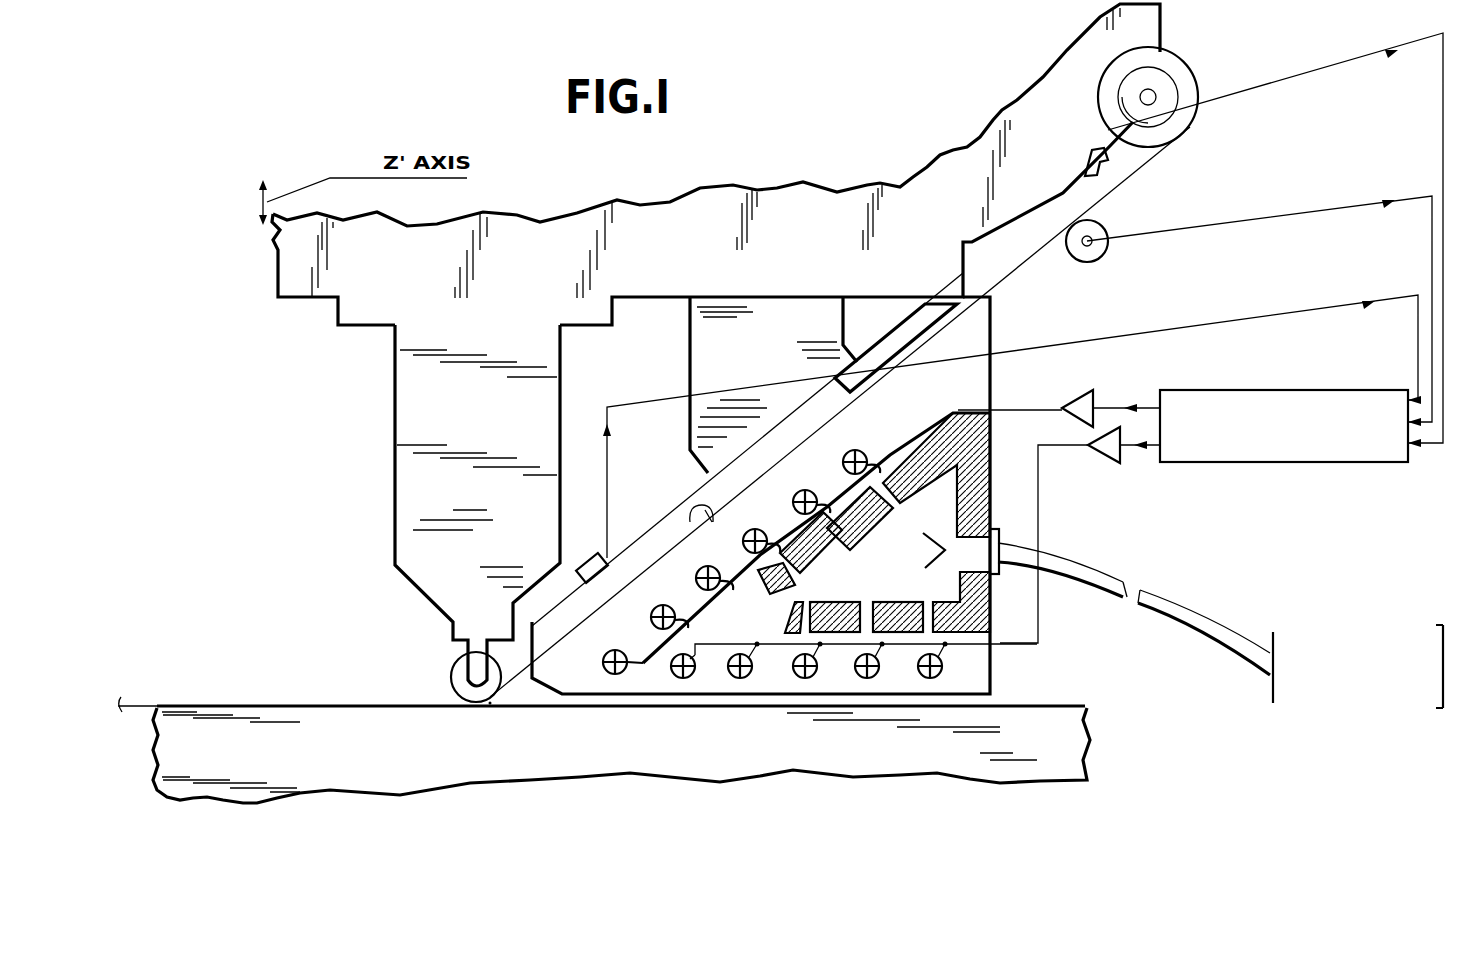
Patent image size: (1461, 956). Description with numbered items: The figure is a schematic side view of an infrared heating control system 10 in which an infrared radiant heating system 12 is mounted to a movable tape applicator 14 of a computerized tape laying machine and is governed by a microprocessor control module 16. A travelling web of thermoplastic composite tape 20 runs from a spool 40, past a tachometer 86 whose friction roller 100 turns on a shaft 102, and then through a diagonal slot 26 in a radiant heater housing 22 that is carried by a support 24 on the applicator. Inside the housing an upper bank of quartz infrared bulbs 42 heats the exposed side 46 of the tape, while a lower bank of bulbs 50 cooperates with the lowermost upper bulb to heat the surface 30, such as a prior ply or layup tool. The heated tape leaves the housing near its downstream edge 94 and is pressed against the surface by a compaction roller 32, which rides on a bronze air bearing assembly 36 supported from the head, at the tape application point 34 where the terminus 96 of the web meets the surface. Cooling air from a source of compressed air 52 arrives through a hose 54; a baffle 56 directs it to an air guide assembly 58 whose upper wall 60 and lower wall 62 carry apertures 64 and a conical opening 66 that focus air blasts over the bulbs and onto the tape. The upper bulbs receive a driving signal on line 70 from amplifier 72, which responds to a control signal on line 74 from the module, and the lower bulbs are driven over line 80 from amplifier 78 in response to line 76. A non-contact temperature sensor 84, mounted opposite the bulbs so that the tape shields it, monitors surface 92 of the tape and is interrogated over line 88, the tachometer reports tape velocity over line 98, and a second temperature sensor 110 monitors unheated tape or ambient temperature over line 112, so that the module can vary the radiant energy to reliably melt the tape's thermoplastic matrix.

The infrared heating control system 10 is at (272, 494).
The infrared radiant heating system 12 is at (1008, 378).
The tape applicator 14 is at (697, 188).
The microprocessor control module 16 is at (1358, 464).
The thermoplastic composite tape 20 is at (1140, 172).
The radiant heater housing 22 is at (1003, 322).
The support 24 is at (765, 357).
The diagonal slot 26 is at (916, 346).
The surface 30 is at (597, 707).
The compaction roller 32 is at (458, 665).
The tape application point 34 is at (486, 708).
The bronze air bearing assembly 36 is at (500, 423).
The spool 40 is at (1190, 70).
The upper bank of quartz infrared emitting bulbs 42 is at (870, 443).
The exposed side of tape 46 is at (664, 555).
The lower bank of bulbs 50 is at (958, 668).
The source of compressed air 52 is at (1363, 626).
The hose 54 is at (1158, 568).
The baffle 56 is at (1003, 522).
The air guide assembly 58 is at (990, 608).
The upper wall 60 is at (858, 500).
The lower wall 62 is at (852, 634).
The apertures 64 is at (897, 512).
The conical cross-section opening 66 is at (780, 608).
The line 70 is at (965, 406).
The amplifier 72 is at (1065, 398).
The line 74 is at (1118, 406).
The line 76 is at (1148, 452).
The amplifier 78 is at (1108, 462).
The line 80 is at (1043, 533).
The temperature sensor 84 is at (580, 565).
The tachometer 86 is at (1118, 252).
The line 88 is at (636, 404).
The surface of tape 92 is at (714, 529).
The downstream edge 94 is at (548, 665).
The terminus 96 is at (498, 708).
The line 98 is at (1283, 210).
The friction roller 100 is at (1082, 262).
The shaft 102 is at (1096, 236).
The second temperature sensor 110 is at (1085, 163).
The line 112 is at (1327, 72).